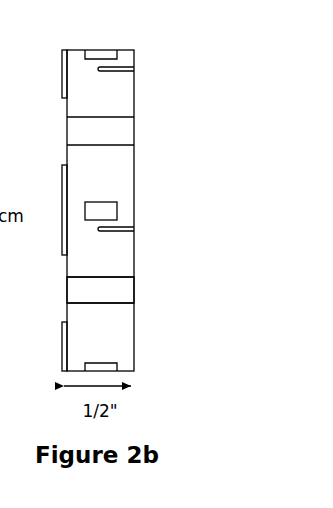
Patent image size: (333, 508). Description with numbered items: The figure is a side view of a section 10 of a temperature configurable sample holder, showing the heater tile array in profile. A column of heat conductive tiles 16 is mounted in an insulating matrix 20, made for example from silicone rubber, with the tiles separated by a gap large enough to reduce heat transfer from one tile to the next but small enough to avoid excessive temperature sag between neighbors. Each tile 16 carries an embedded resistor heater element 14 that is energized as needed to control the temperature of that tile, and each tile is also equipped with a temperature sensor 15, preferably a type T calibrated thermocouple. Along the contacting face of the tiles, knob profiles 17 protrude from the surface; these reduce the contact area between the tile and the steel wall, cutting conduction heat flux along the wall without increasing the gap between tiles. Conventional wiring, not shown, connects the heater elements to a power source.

The section 10 is at (62, 48).
The heater element 14 is at (106, 209).
The temperature sensor 15 is at (126, 226).
The heat conductive tile 16 is at (83, 167).
The knob profile 17 is at (61, 66).
The insulating matrix 20 is at (103, 284).